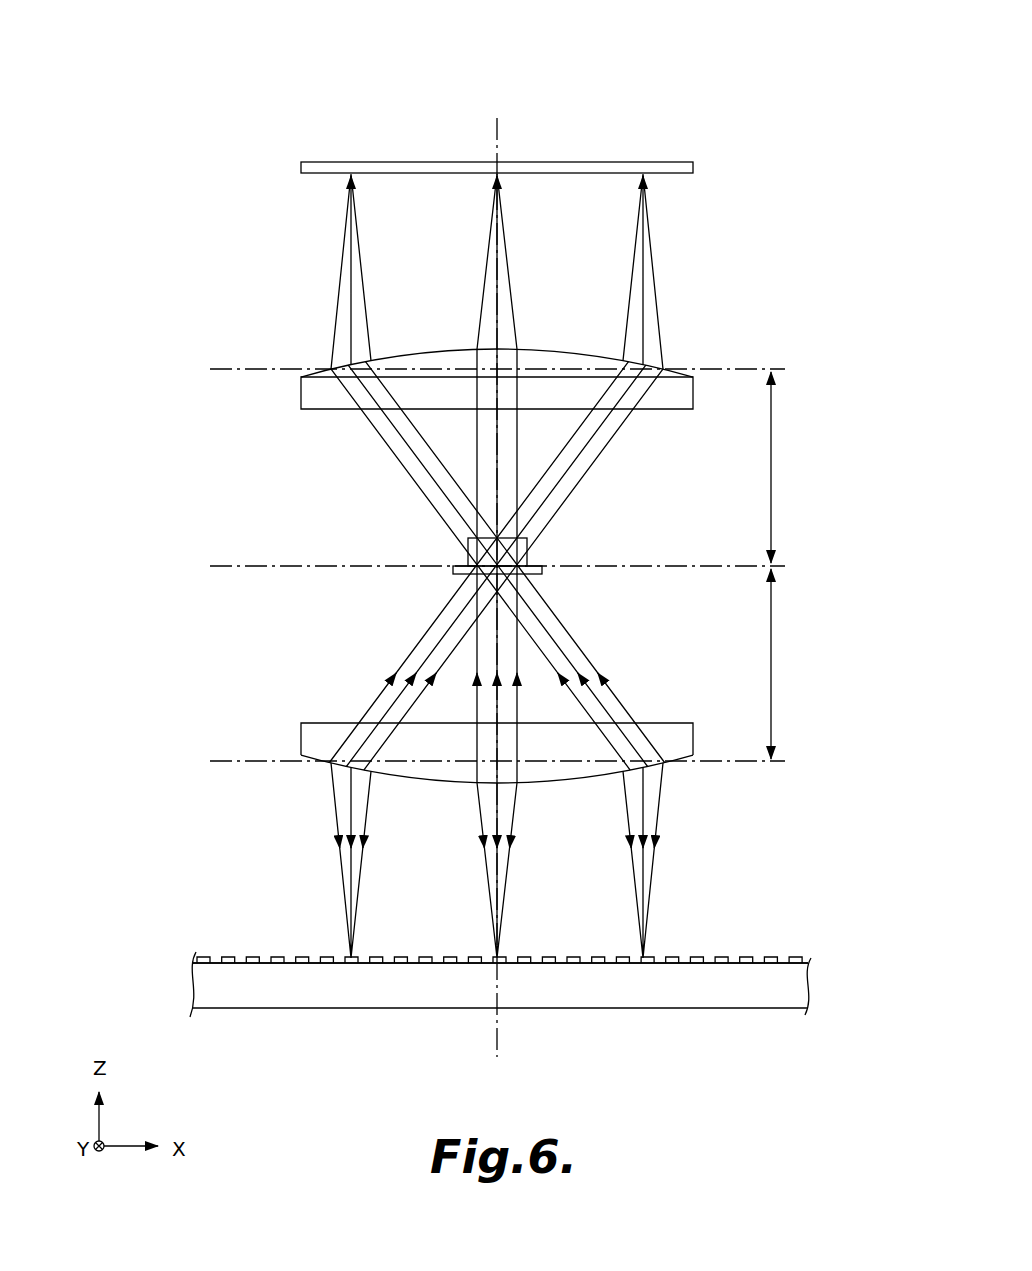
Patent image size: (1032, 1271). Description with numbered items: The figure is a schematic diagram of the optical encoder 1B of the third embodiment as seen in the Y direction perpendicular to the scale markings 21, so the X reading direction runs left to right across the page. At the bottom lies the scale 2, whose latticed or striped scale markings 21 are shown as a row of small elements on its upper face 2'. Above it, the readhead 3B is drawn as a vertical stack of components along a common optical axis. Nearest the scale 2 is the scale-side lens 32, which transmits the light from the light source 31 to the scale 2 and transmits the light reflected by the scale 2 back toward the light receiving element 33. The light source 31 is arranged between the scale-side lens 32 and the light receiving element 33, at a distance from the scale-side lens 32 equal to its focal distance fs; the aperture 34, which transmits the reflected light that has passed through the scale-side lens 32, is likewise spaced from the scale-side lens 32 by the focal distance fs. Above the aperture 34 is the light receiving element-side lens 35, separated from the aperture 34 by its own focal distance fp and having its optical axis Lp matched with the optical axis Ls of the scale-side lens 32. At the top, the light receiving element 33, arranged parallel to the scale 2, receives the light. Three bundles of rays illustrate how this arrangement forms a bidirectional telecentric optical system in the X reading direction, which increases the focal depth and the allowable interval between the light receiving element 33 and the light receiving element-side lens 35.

The optical encoder 1B is at (745, 78).
The readhead 3B is at (284, 283).
The light receiving element 33 is at (605, 162).
The light receiving element-side lens 35 is at (693, 392).
The light source 31 is at (530, 560).
The aperture 34 is at (453, 570).
The scale-side lens 32 is at (693, 739).
The scale markings 21 is at (795, 957).
The substrate surface 2' is at (534, 937).
The scale 2 is at (534, 950).